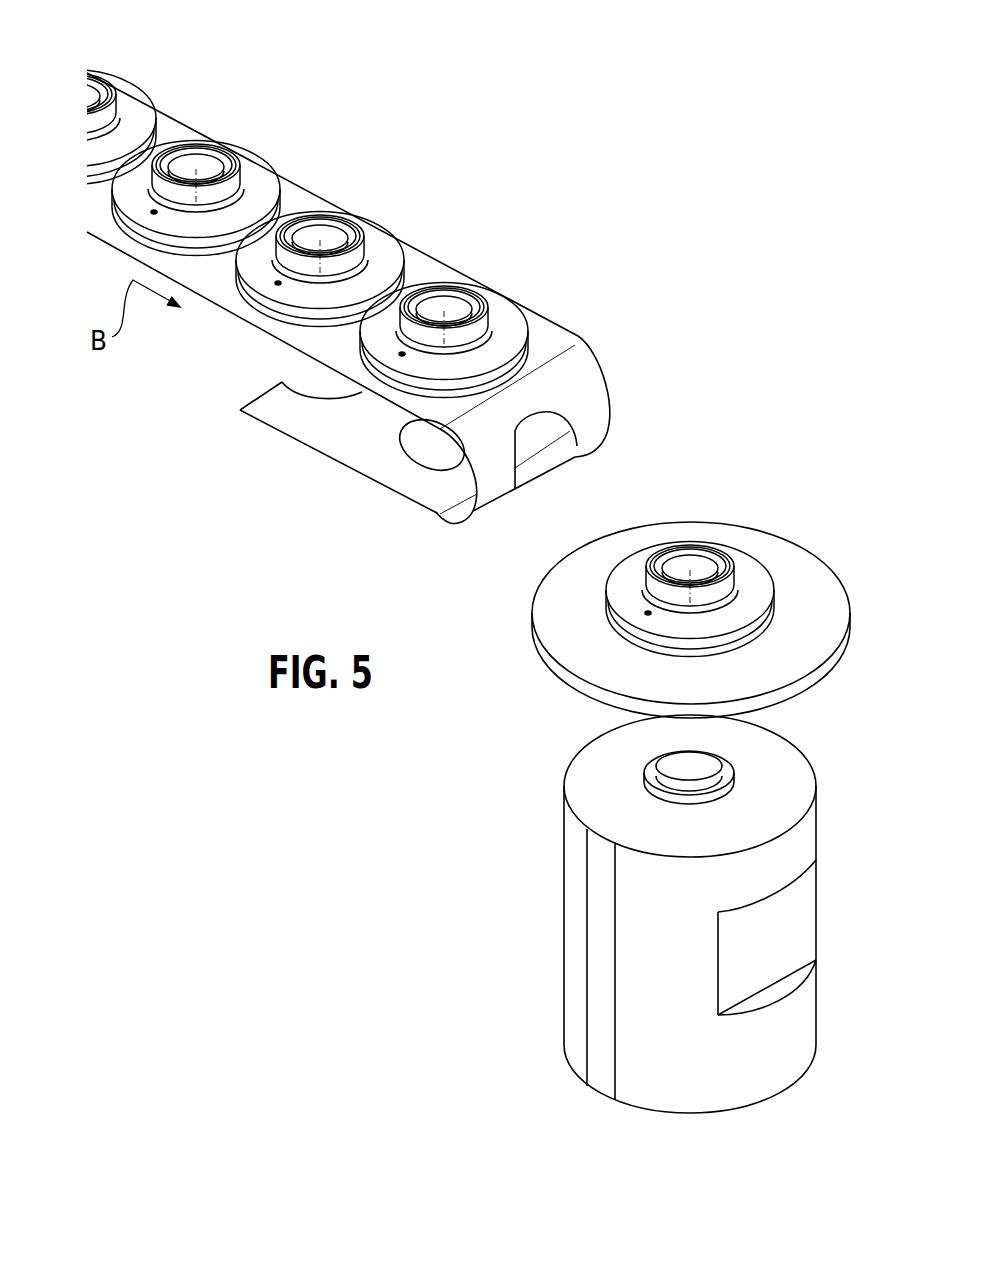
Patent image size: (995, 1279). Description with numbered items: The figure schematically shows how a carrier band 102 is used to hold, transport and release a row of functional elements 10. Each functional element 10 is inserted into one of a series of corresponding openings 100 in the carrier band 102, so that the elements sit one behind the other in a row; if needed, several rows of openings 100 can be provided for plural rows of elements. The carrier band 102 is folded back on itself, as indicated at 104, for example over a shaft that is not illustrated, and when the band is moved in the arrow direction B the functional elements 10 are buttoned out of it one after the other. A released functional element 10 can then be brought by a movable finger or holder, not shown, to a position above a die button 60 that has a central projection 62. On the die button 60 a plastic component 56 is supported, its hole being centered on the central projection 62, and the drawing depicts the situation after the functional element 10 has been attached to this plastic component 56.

The functional element 10 is at (121, 100).
The plastic component 56 is at (820, 587).
The die button 60 is at (785, 1013).
The central projection 62 is at (697, 764).
The openings 100 is at (570, 453).
The carrier band 102 is at (540, 344).
The folded-back portion of the carrier band 104 is at (316, 424).